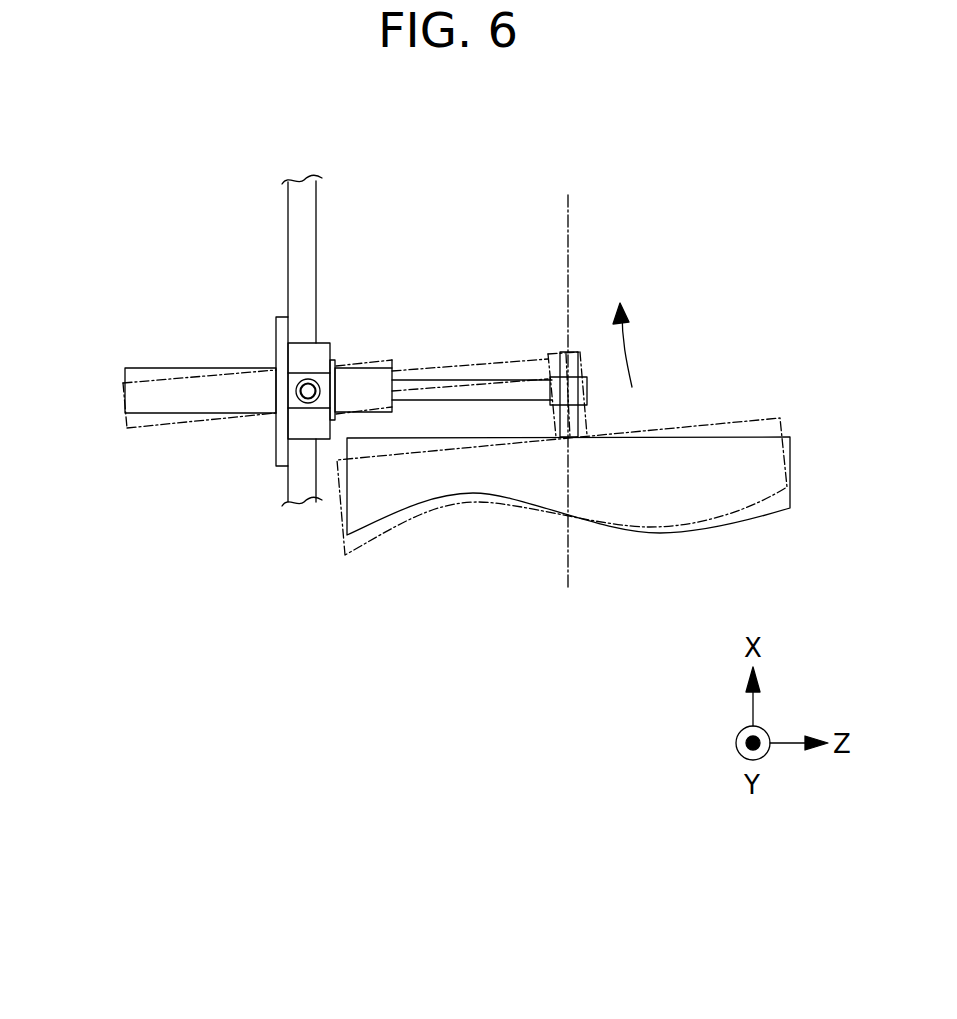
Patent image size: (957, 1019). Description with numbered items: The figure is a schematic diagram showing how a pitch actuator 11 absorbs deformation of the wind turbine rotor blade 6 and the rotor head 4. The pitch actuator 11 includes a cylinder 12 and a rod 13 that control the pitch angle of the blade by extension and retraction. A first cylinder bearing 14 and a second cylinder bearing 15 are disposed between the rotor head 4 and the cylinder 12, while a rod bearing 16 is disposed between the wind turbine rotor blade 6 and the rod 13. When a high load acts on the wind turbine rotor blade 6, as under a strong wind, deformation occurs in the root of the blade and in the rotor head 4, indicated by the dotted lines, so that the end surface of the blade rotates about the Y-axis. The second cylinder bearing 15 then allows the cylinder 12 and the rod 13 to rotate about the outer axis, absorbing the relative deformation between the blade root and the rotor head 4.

The rotor head 4 is at (297, 212).
The wind turbine rotor blade 6 is at (791, 450).
The pitch actuator 11 is at (118, 543).
The cylinder 12 is at (142, 368).
The rod 13 is at (485, 385).
The first cylinder bearing 14 is at (272, 365).
The second cylinder bearing 15 is at (320, 346).
The rod bearing 16 is at (588, 395).